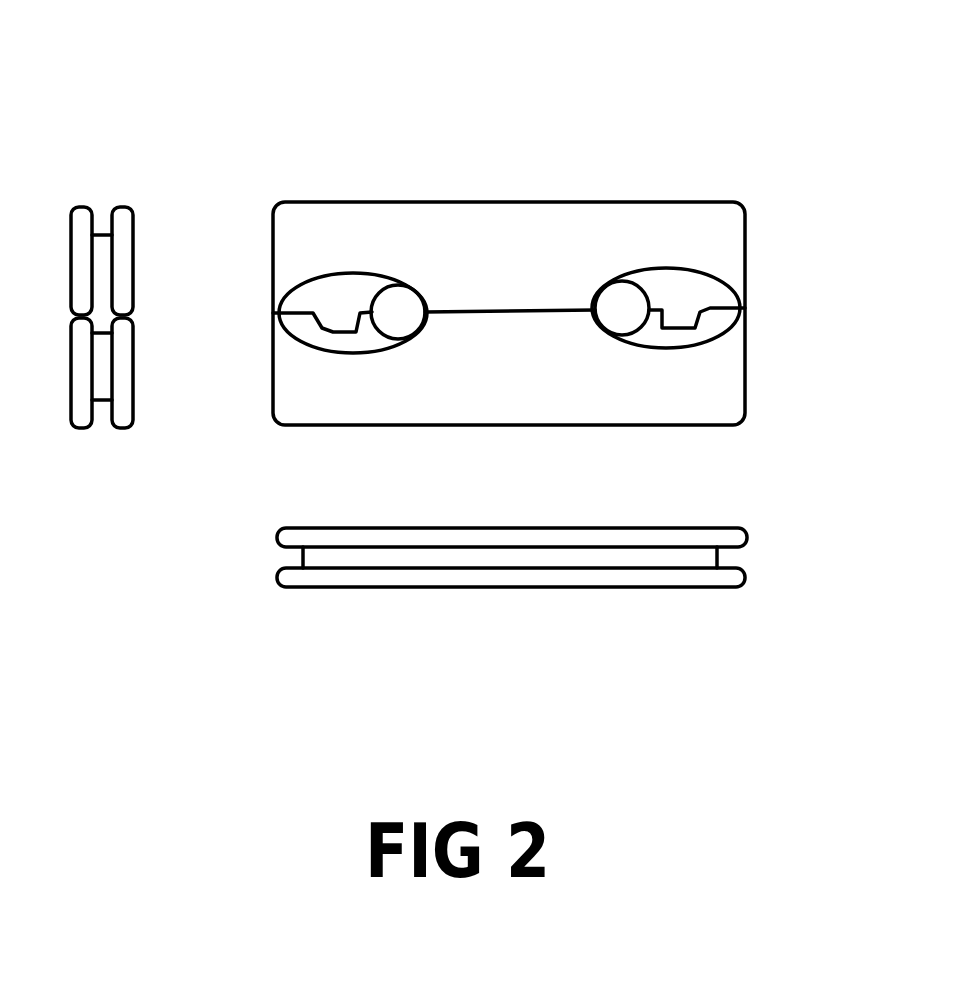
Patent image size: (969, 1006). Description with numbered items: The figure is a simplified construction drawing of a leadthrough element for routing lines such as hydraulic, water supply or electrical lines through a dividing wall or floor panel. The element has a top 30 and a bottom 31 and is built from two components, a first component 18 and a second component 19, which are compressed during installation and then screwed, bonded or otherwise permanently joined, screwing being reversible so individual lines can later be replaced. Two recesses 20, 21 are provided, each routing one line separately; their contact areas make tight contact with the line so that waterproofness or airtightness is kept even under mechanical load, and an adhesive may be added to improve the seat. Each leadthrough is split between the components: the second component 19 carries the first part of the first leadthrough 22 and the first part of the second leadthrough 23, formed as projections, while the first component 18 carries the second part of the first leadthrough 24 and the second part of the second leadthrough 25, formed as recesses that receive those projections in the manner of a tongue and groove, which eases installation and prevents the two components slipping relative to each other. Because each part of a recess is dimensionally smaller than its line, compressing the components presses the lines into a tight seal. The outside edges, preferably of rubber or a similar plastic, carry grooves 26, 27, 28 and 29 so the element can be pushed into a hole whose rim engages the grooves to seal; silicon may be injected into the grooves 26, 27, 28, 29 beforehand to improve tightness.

The first component 18 is at (640, 385).
The second component 19 is at (535, 228).
The recess 20 is at (398, 305).
The recess 21 is at (617, 303).
The first part of first leadthrough 22 is at (338, 318).
The first part of second leadthrough 23 is at (678, 315).
The second part of first leadthrough 24 is at (343, 340).
The second part of second leadthrough 25 is at (683, 337).
The groove 26 is at (100, 413).
The groove 27 is at (100, 217).
The groove 28 is at (280, 553).
The groove 29 is at (747, 550).
The top 30 is at (472, 525).
The bottom 31 is at (475, 590).